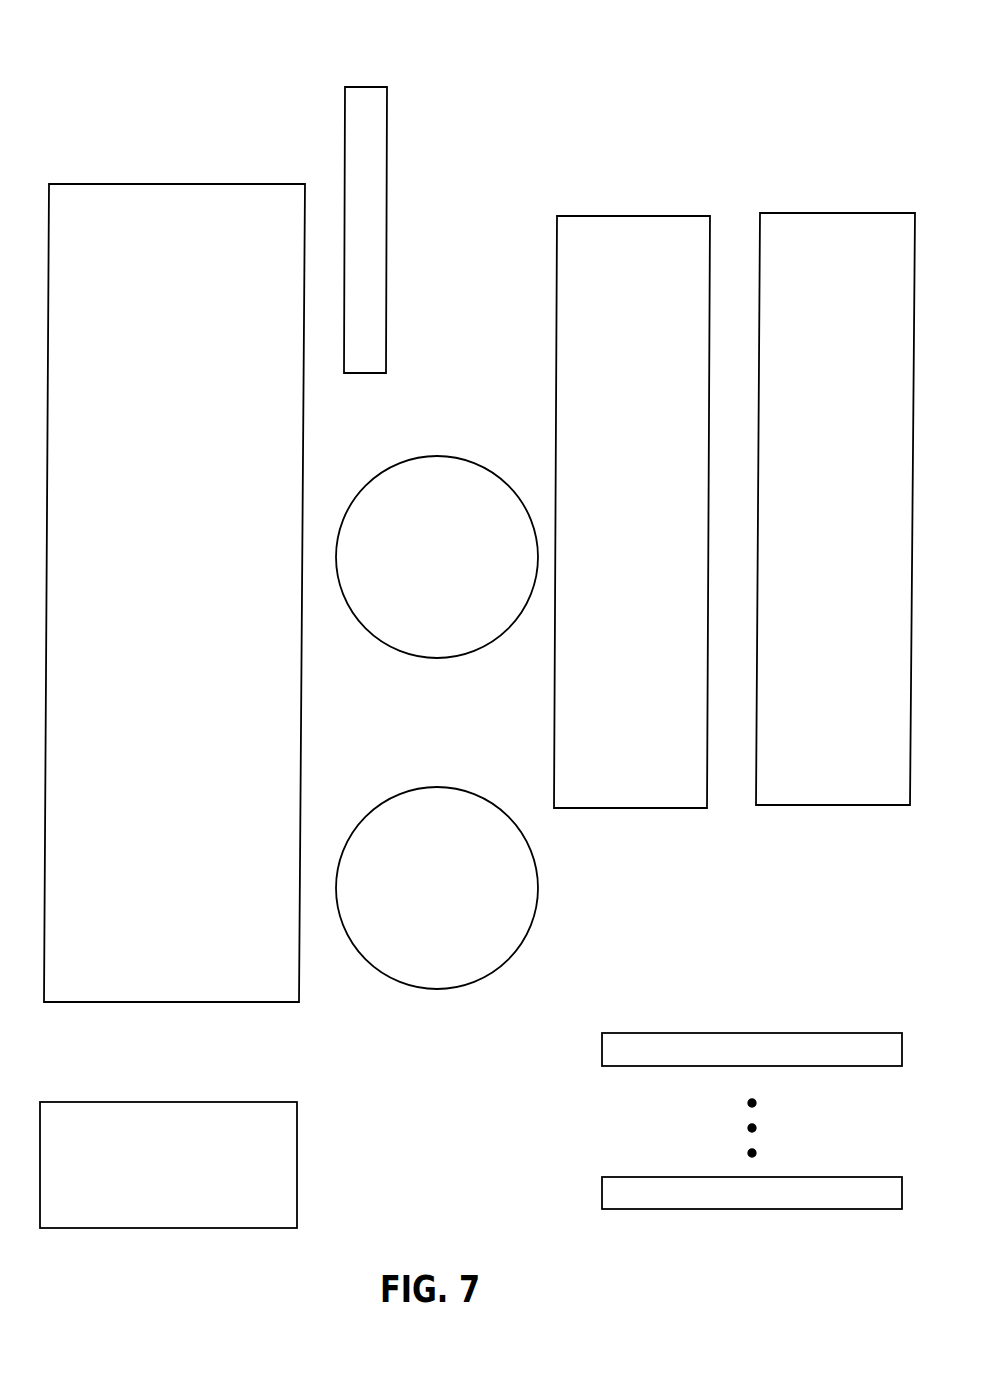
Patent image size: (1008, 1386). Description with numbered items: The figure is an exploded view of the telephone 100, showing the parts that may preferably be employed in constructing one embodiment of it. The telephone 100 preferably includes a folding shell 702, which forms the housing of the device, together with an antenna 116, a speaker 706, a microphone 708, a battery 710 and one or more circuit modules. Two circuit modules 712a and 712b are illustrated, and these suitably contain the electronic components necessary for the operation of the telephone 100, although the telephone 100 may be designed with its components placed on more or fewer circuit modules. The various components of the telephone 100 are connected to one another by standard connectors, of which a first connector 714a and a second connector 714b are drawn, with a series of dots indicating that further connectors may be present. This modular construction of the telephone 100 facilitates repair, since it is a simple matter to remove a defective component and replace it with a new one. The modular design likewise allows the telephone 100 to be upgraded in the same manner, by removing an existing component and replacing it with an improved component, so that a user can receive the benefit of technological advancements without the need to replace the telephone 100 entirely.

The telephone 100 is at (143, 71).
The folding shell 702 is at (275, 1003).
The antenna 116 is at (355, 374).
The speaker 706 is at (443, 660).
The microphone 708 is at (527, 933).
The circuit module 712a is at (605, 809).
The circuit module 712b is at (807, 806).
The battery 710 is at (297, 1165).
The standard connector 714a is at (602, 1045).
The standard connector 714b is at (602, 1190).